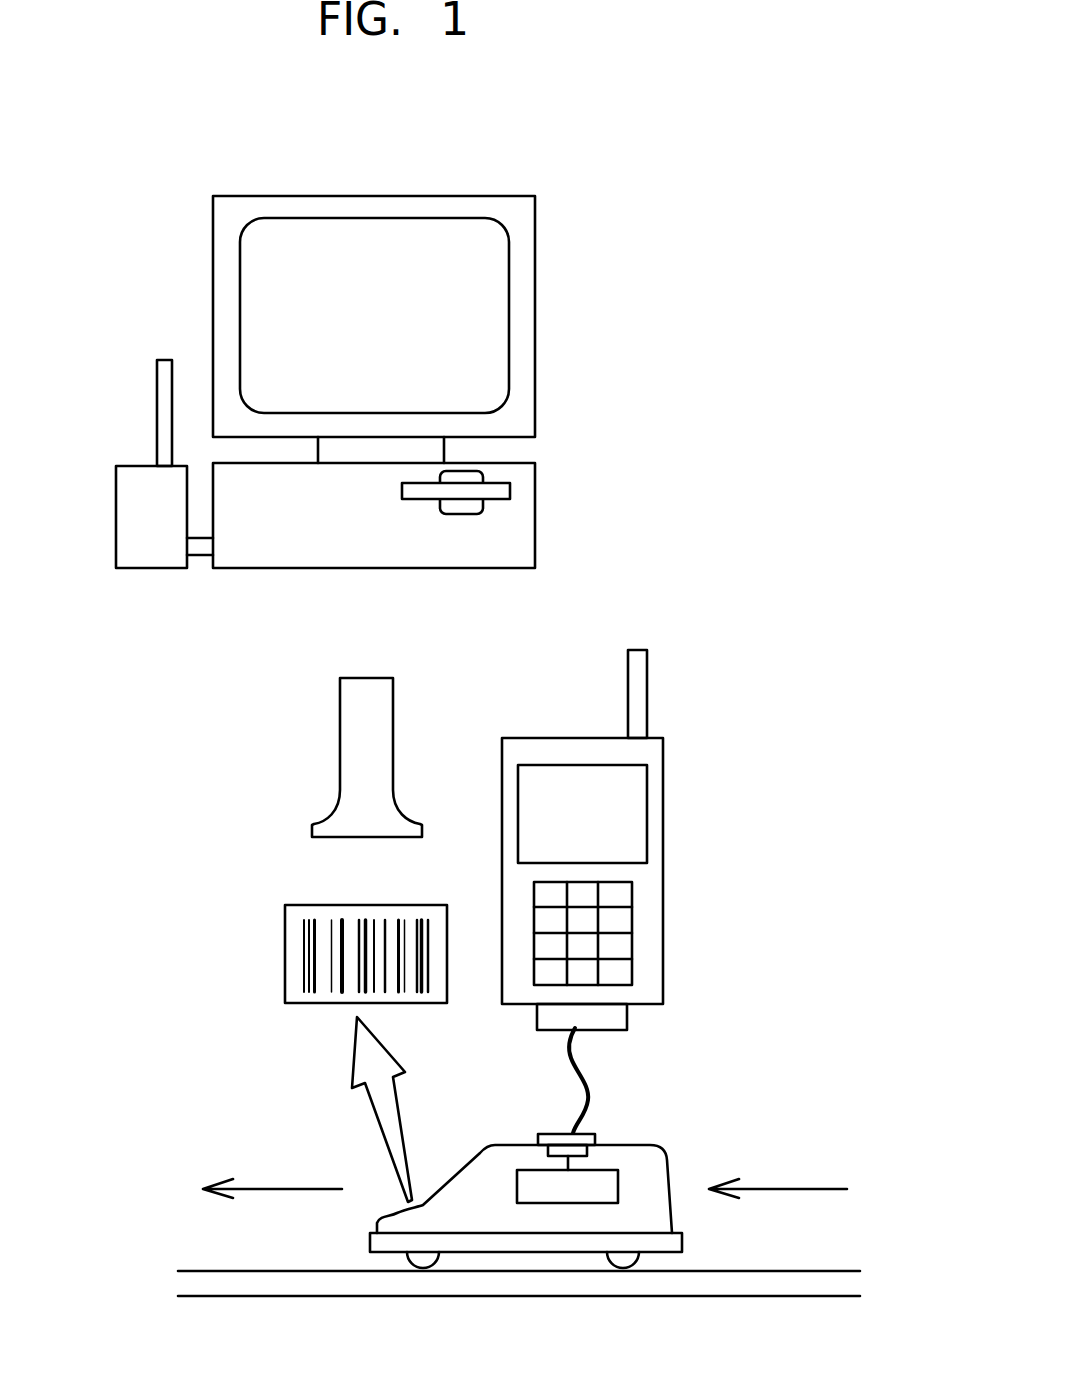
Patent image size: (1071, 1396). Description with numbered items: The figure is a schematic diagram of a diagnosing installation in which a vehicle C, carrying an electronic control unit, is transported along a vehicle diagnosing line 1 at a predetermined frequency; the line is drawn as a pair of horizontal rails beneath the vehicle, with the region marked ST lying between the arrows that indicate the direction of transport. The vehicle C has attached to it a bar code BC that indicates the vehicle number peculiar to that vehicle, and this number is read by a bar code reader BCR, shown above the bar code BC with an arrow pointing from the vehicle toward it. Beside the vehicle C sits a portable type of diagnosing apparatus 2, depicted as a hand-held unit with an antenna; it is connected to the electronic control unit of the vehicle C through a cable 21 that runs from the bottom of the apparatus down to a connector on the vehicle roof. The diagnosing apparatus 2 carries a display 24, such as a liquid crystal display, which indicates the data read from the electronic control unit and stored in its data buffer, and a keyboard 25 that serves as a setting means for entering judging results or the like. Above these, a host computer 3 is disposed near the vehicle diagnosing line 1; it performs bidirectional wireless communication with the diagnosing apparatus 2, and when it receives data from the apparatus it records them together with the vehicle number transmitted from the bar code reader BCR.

The vehicle diagnosing line 1 is at (291, 1293).
The portable type of diagnosing apparatus 2 is at (625, 840).
The host computer 3 is at (523, 285).
The cable 21 is at (592, 1100).
The display 24 is at (558, 773).
The keyboard 25 is at (625, 946).
The bar code BC is at (307, 912).
The bar code reader BCR is at (383, 707).
The vehicle C is at (652, 1155).
The inspection station ST is at (504, 1330).